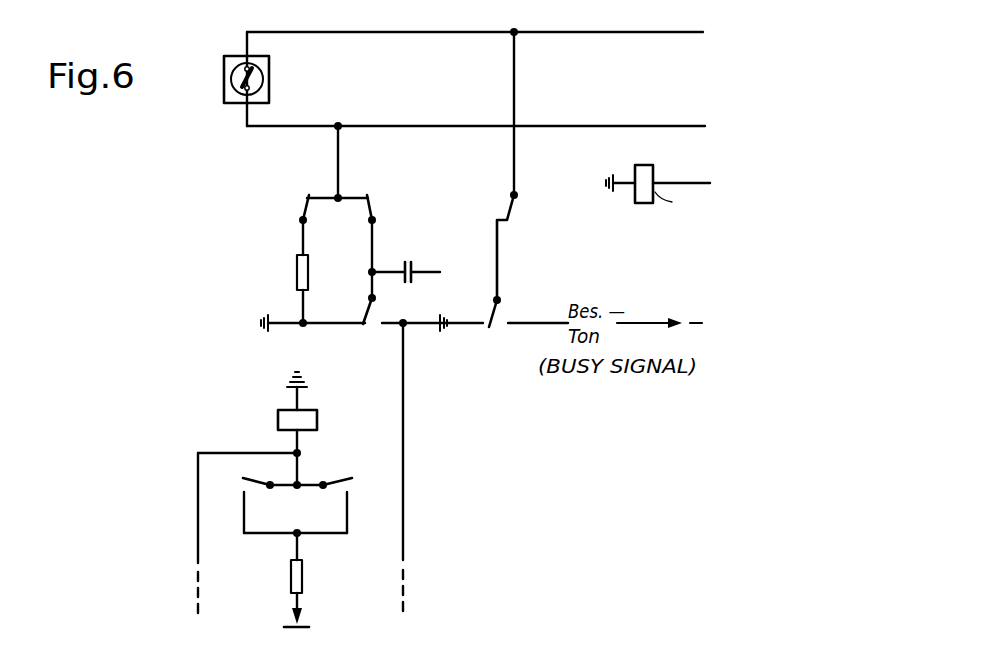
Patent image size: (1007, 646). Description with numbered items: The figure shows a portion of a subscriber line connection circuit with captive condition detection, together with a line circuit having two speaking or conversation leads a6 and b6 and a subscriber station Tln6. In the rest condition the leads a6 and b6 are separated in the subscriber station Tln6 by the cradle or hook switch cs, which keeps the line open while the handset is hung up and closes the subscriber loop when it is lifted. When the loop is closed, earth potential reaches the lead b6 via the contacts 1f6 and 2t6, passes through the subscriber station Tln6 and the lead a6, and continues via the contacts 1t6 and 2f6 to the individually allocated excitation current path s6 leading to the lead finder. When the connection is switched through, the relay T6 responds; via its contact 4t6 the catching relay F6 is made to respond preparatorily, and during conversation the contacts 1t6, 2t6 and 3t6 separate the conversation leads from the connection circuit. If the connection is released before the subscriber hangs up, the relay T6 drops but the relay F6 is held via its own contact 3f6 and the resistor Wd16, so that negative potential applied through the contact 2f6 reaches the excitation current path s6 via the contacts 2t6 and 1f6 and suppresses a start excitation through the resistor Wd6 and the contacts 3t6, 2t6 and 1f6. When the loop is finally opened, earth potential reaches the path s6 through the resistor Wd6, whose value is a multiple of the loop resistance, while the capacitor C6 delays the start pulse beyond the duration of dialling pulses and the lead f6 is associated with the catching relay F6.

The subscriber station Tln6 is at (269, 79).
The cradle or hook switch cs is at (228, 76).
The speaking lead a6 is at (475, 20).
The speaking lead b6 is at (477, 114).
The contact of relay T6 3t6 is at (304, 204).
The contact of relay T6 2t6 is at (370, 204).
The resistor Wd6 is at (298, 276).
The capacitor C6 is at (420, 262).
The contact of relay F6 1f6 is at (374, 326).
The contact of relay T6 1t6 is at (513, 206).
The contact of relay F6 2f6 is at (500, 326).
The relay T6 is at (642, 166).
The catching relay F6 is at (318, 442).
The contact of relay T6 4t6 is at (248, 484).
The contact of relay F6 3f6 is at (345, 484).
The resistor Wd16 is at (288, 592).
The control lead f6 is at (197, 545).
The excitation current path s6 is at (404, 545).